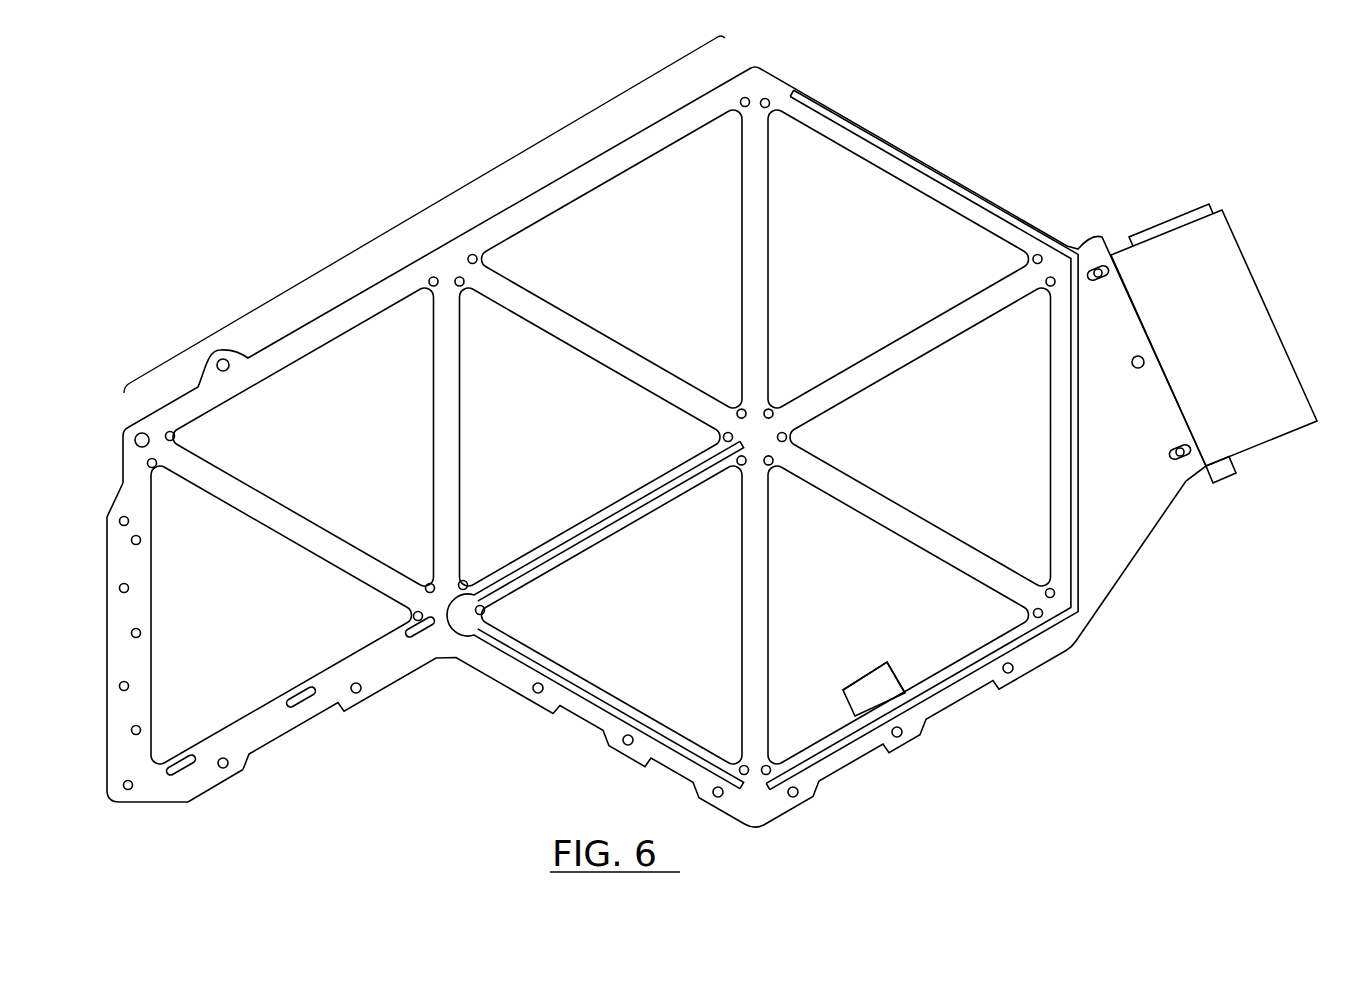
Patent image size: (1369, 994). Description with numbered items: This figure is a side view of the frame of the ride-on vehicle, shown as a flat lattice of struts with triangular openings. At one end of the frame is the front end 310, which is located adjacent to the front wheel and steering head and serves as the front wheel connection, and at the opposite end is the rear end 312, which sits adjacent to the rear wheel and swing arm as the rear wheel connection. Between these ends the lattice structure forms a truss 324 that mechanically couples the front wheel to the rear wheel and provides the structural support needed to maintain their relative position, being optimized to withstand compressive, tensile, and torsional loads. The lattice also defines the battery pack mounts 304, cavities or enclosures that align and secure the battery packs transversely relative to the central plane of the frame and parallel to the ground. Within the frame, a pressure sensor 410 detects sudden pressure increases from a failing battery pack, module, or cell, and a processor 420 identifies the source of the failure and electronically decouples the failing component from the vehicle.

The battery pack mount 304 is at (343, 661).
The front end 310 is at (1256, 280).
The rear end 312 is at (105, 612).
The truss 324 is at (438, 194).
The pressure sensor 410 is at (897, 676).
The processor 420 is at (877, 692).